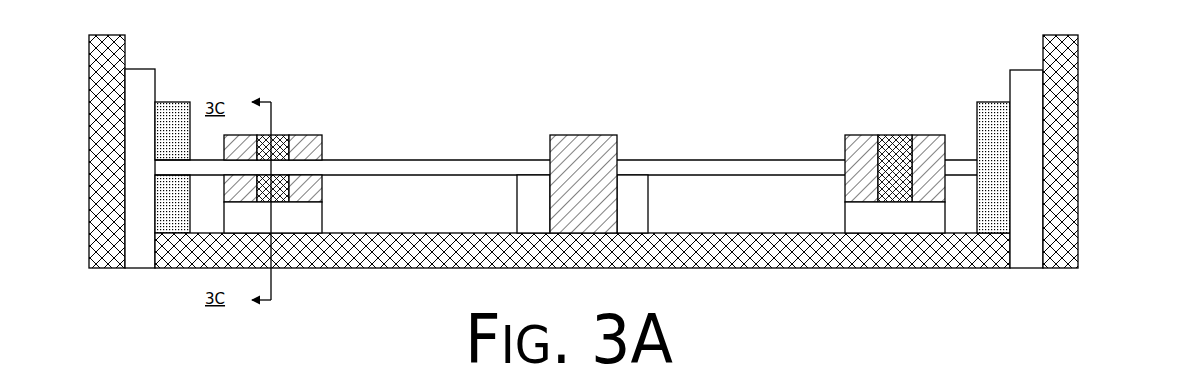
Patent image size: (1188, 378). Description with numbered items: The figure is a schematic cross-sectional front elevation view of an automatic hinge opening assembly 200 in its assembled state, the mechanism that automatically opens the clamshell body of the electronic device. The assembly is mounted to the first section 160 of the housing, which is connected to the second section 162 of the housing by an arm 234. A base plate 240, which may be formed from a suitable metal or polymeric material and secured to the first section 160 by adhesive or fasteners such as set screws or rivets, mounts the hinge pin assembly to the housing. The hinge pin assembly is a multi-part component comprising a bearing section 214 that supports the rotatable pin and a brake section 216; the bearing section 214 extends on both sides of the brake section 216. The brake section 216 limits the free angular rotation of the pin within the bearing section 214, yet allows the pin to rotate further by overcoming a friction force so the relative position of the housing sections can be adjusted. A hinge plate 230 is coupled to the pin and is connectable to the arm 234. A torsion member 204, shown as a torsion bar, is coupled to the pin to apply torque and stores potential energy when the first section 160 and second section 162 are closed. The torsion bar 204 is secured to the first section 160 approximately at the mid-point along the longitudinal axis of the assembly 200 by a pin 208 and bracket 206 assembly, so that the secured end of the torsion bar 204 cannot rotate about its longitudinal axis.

The first section of the housing 160 is at (843, 267).
The second section of the housing 162 is at (1077, 152).
The automatic hinge opening assembly 200 is at (415, 65).
The torsion member 204 is at (813, 168).
The bracket 206 is at (648, 205).
The pin 208 is at (583, 133).
The bearing section 214 is at (928, 136).
The brake section 216 is at (893, 136).
The hinge plate 230 is at (995, 101).
The arm 234 is at (1030, 69).
The base plate 240 is at (895, 217).